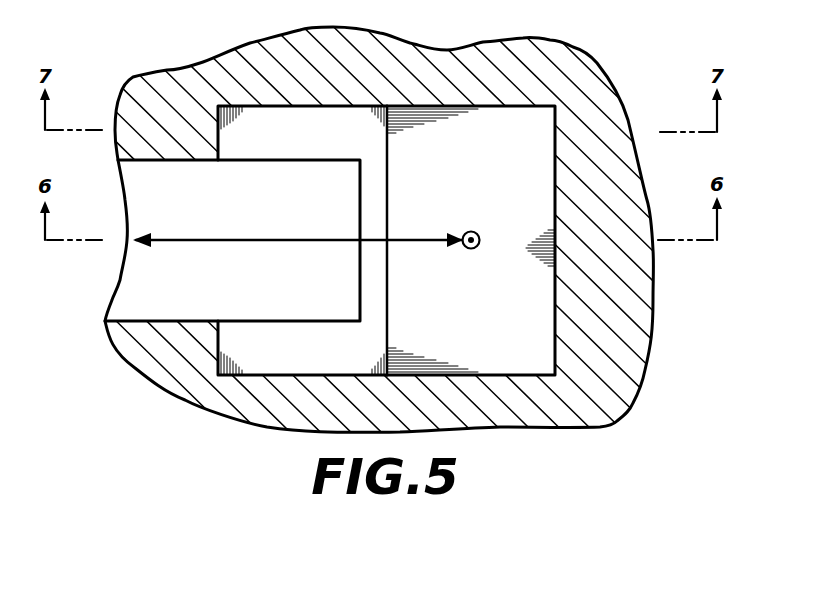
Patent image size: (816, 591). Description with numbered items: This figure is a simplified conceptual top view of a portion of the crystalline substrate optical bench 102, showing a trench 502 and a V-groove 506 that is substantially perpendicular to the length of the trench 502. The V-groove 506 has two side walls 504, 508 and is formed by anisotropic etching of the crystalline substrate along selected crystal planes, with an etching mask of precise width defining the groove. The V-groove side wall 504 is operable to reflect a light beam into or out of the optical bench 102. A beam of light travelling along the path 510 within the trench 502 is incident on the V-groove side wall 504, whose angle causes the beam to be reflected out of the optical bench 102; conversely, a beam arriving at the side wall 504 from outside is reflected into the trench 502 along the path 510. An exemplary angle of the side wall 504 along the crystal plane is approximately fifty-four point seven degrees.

The optical bench 102 is at (168, 363).
The trench 502 is at (140, 288).
The V-groove side wall 504 is at (458, 193).
The V-groove 506 is at (391, 104).
The side wall 508 is at (330, 143).
The path 510 is at (250, 240).